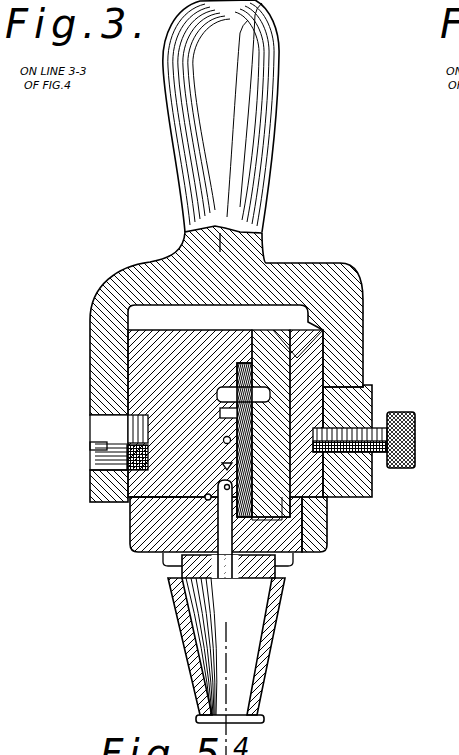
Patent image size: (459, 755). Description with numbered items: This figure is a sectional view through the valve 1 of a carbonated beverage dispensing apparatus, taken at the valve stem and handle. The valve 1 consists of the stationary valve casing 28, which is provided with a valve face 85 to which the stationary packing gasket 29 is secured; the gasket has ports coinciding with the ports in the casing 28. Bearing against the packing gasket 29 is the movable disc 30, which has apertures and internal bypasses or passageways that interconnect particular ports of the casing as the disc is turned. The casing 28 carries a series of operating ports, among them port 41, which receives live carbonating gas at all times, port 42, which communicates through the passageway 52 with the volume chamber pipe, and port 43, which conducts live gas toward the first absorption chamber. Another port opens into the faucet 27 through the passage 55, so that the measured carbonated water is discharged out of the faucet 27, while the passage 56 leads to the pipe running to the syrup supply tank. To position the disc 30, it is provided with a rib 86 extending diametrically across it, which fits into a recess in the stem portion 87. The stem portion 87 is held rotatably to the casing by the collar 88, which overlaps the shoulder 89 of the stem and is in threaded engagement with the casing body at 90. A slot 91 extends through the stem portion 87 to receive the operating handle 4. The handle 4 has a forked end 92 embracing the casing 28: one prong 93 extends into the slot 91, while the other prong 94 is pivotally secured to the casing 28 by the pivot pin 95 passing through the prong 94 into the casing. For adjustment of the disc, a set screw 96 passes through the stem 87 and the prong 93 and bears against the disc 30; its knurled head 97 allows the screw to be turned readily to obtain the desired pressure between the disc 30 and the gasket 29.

The valve 1 is at (128, 522).
The operating handle 4 is at (250, 143).
The faucet 27 is at (243, 632).
The valve casing 28 is at (140, 539).
The packing gasket 29 is at (258, 362).
The movable disc 30 is at (313, 360).
The port 41 is at (222, 392).
The port 42 is at (220, 439).
The port 43 is at (220, 413).
The passageway 52 is at (125, 489).
The passage 55 is at (193, 560).
The passage 56 is at (128, 509).
The valve face 85 is at (222, 372).
The rib 86 is at (365, 388).
The stem portion 87 is at (358, 362).
The collar 88 is at (295, 330).
The shoulder 89 is at (327, 523).
The threaded engagement 90 is at (285, 368).
The slot 91 is at (372, 389).
The forked end 92 is at (172, 265).
The prong 93 is at (345, 502).
The prong 94 is at (100, 383).
The pivot pin 95 is at (105, 430).
The set screw 96 is at (340, 432).
The knurled head 97 is at (415, 429).